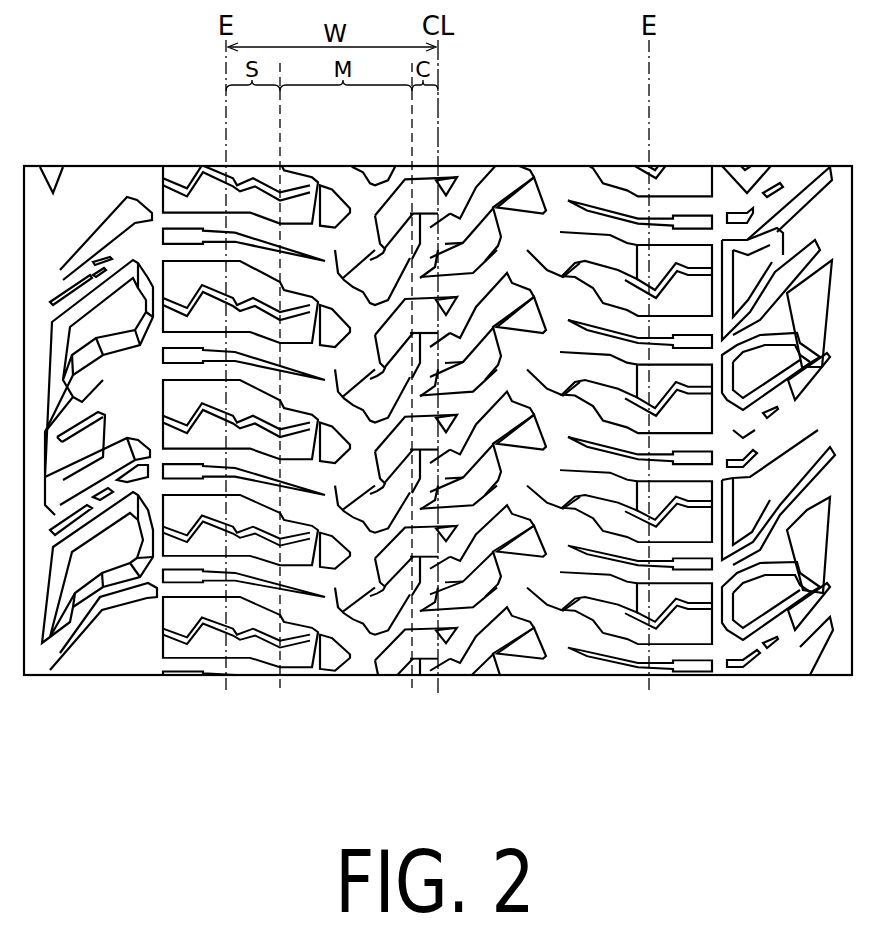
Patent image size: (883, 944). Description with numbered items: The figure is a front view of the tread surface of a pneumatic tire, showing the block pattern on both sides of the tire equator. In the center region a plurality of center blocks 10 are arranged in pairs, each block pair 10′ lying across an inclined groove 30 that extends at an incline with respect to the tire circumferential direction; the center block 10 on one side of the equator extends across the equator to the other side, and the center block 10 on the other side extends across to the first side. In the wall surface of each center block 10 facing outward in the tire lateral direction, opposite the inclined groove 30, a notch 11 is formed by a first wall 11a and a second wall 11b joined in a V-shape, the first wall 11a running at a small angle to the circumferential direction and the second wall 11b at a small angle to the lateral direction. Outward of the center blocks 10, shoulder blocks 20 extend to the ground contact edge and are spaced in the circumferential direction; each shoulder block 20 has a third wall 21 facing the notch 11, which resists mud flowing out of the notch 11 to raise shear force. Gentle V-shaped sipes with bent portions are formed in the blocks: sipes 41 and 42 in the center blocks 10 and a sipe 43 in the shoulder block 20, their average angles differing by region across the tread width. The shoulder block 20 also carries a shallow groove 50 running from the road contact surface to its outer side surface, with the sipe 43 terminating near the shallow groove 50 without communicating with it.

The center block 10 is at (440, 185).
The block pair 10′ is at (440, 108).
The notch 11 is at (510, 212).
The first wall 11a is at (382, 250).
The second wall 11b is at (345, 222).
The shoulder block 20 is at (628, 625).
The third wall 21 is at (483, 655).
The inclined groove 30 is at (460, 648).
The sipe 41 is at (405, 630).
The sipe 42 is at (367, 628).
The sipe 43 is at (280, 640).
The shallow groove 50 is at (690, 625).